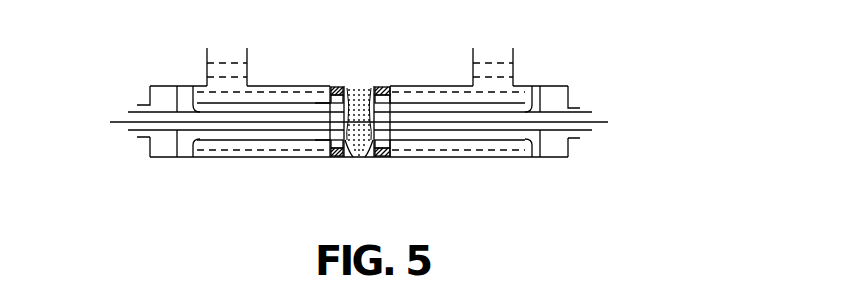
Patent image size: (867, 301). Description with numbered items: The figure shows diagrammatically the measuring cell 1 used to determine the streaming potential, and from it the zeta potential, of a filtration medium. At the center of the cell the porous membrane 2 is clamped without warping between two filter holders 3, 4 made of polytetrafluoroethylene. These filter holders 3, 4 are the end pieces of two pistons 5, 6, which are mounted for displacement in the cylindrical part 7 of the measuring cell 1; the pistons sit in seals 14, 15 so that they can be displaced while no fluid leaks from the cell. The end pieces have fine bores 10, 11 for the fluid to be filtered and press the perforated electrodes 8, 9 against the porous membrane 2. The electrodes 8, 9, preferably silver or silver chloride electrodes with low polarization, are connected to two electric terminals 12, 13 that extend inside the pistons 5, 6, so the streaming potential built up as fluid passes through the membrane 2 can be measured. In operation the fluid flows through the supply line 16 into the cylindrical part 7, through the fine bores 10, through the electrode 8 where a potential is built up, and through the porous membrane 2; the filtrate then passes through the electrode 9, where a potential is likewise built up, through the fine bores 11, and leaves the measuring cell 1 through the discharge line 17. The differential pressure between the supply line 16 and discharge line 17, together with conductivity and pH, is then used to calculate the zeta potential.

The measuring cell 1 is at (536, 68).
The porous membrane 2 is at (364, 100).
The filter holder 3 is at (378, 155).
The filter holder 4 is at (333, 157).
The piston 5 is at (488, 131).
The piston 6 is at (226, 133).
The cylindrical part 7 is at (275, 84).
The perforated electrode 8 is at (355, 158).
The perforated electrode 9 is at (362, 158).
The fine bores 10 is at (337, 86).
The fine bores 11 is at (393, 87).
The electric terminal 12 is at (118, 124).
The electric terminal 13 is at (600, 124).
The seal 14 is at (186, 147).
The seal 15 is at (535, 150).
The supply line 16 is at (207, 63).
The discharge line 17 is at (515, 60).